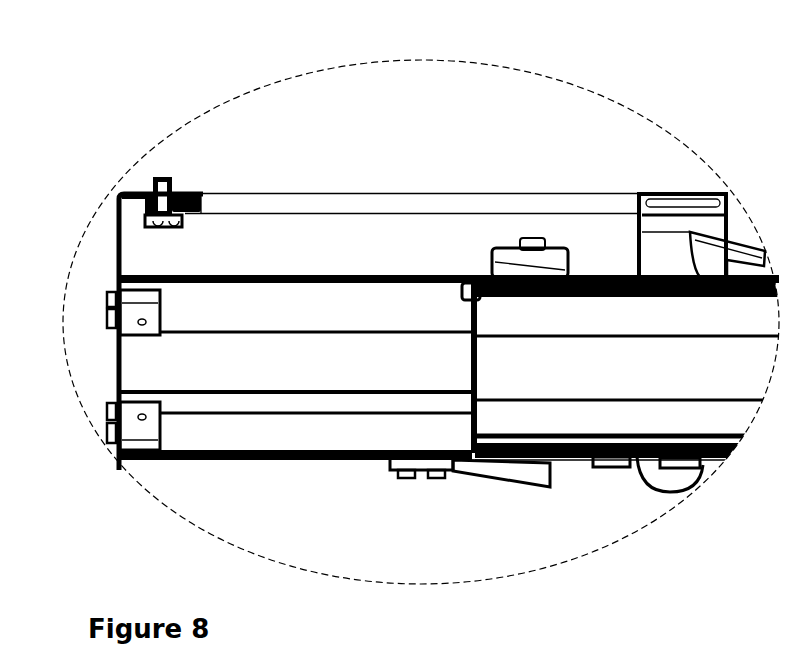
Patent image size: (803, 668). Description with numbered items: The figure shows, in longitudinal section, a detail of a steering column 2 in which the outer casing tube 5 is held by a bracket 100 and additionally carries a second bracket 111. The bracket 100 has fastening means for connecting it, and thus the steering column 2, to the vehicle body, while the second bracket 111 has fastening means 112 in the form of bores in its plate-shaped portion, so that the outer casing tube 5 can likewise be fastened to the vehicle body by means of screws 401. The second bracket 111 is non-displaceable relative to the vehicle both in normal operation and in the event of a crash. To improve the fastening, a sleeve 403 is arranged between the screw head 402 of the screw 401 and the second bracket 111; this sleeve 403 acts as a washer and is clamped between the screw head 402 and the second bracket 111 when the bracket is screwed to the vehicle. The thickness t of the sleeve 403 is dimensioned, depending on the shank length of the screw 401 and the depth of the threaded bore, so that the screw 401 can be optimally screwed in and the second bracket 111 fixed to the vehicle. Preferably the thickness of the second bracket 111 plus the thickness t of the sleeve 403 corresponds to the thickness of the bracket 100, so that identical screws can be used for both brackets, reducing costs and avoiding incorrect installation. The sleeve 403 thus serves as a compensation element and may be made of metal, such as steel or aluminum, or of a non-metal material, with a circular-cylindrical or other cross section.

The steering column 2 is at (487, 153).
The outer casing tube 5 is at (300, 275).
The bracket 100 is at (663, 190).
The screw 401 is at (155, 186).
The second bracket 111 is at (191, 192).
The fastening means 112 is at (151, 200).
The sleeve 403 is at (145, 203).
The screw head 402 is at (145, 222).
The thickness t is at (205, 208).